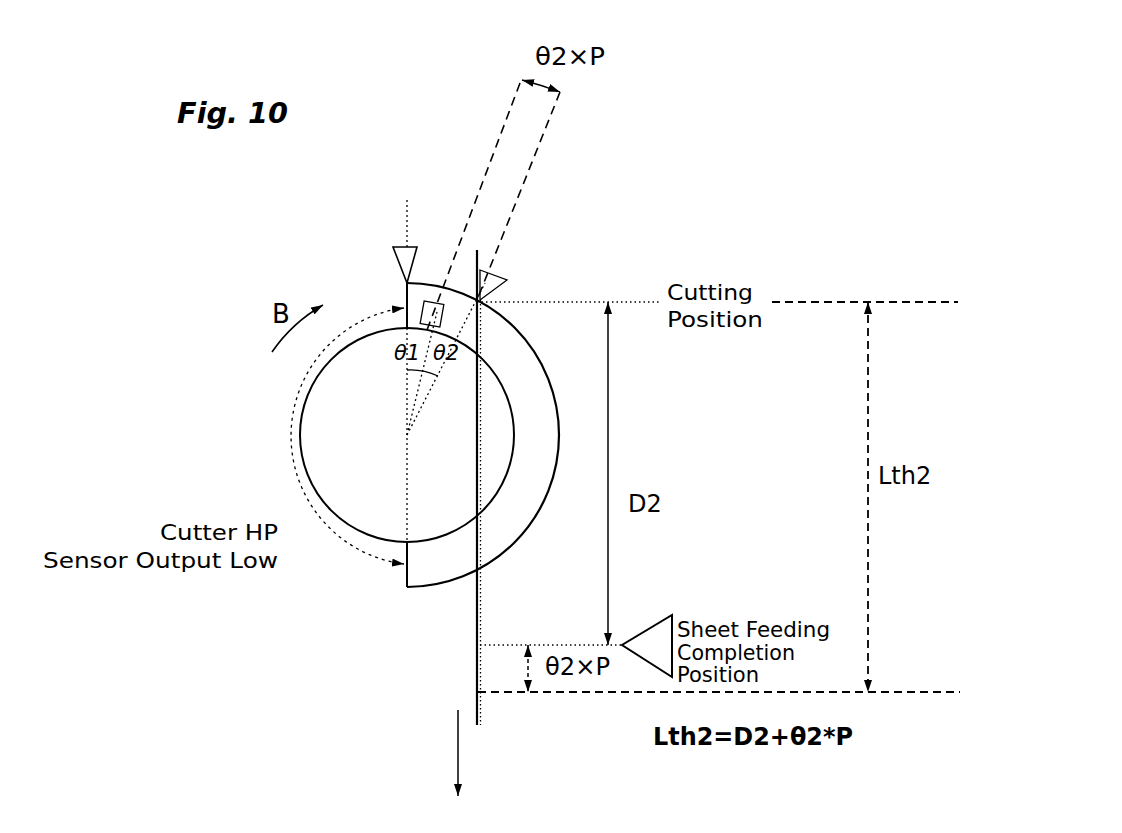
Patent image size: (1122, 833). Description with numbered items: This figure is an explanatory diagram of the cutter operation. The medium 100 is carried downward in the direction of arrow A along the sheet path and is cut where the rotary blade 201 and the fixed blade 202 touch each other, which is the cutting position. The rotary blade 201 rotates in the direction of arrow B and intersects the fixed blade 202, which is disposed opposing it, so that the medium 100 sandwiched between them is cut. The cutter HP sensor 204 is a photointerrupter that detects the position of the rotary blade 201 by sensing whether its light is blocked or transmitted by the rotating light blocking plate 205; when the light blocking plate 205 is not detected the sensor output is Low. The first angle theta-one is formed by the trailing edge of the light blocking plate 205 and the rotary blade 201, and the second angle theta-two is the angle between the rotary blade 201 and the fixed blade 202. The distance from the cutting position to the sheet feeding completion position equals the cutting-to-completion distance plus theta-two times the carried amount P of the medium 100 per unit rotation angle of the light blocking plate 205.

The medium 100 is at (478, 702).
The rotary blade 201 is at (455, 291).
The fixed blade 202 is at (506, 279).
The cutter HP sensor 204 is at (418, 250).
The light blocking plate 205 is at (432, 567).